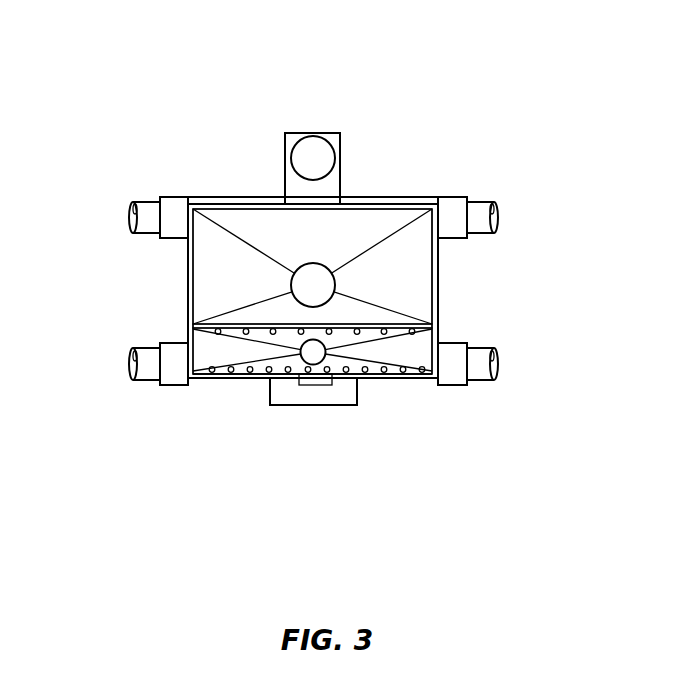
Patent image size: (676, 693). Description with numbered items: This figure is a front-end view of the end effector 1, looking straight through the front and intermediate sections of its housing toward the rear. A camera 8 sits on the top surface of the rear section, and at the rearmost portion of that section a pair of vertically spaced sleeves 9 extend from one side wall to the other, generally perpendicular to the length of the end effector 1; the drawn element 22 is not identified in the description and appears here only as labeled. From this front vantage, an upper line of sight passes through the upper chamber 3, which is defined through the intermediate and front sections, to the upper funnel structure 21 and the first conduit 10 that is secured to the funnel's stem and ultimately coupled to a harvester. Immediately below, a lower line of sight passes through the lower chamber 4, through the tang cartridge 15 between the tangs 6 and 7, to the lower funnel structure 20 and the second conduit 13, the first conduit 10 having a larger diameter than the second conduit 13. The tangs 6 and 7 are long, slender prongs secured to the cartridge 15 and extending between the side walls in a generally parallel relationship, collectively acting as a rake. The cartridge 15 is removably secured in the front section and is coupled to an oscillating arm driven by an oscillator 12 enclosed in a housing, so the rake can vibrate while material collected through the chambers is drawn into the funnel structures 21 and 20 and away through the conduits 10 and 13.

The end effector 1 is at (190, 115).
The upper chamber 3 is at (226, 284).
The lower chamber 4 is at (372, 359).
The tang 6 is at (216, 335).
The tang 7 is at (247, 377).
The camera 8 is at (342, 144).
The sleeve 9 is at (168, 192).
The first conduit 10 is at (312, 278).
The oscillator 12 is at (326, 408).
The second conduit 13 is at (309, 362).
The tang cartridge 15 is at (398, 325).
The lower funnel structure 20 is at (413, 352).
The upper funnel structure 21 is at (352, 230).
The pipe 22 is at (147, 215).